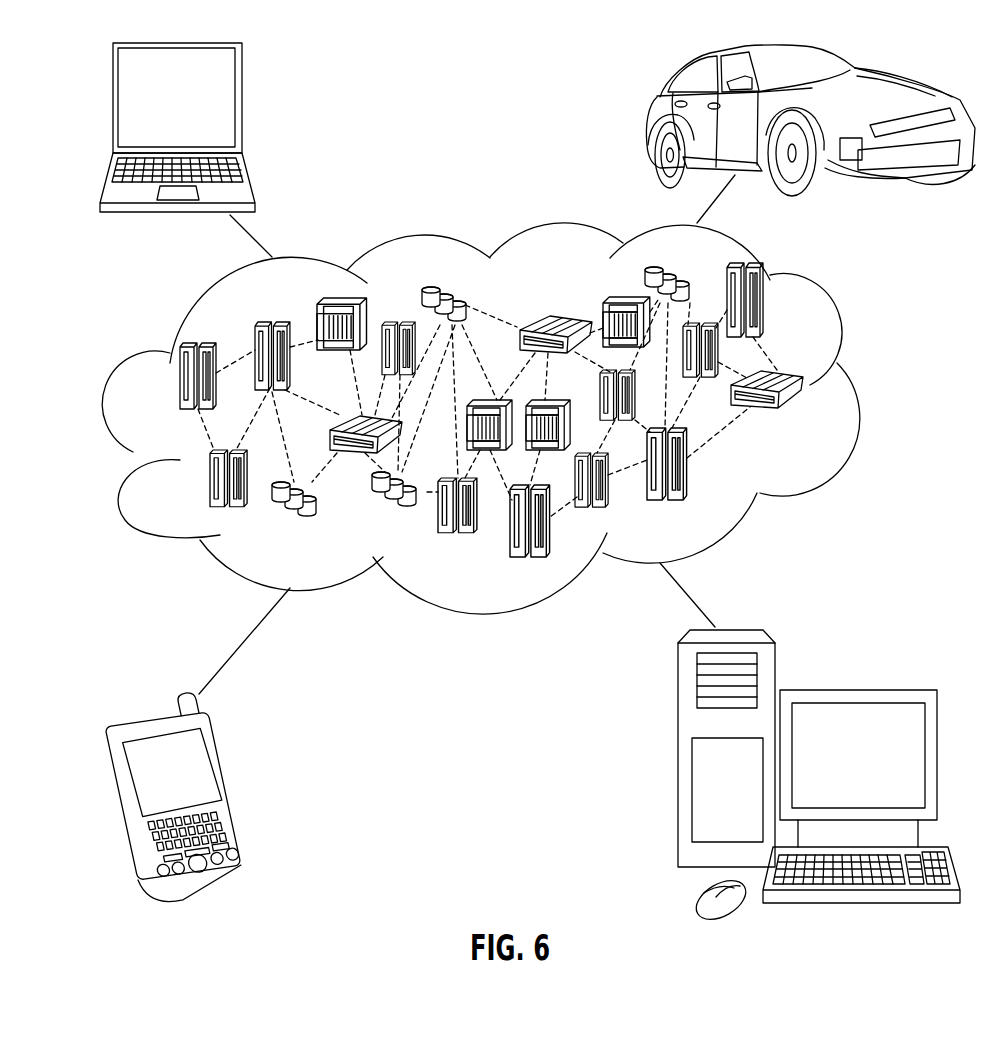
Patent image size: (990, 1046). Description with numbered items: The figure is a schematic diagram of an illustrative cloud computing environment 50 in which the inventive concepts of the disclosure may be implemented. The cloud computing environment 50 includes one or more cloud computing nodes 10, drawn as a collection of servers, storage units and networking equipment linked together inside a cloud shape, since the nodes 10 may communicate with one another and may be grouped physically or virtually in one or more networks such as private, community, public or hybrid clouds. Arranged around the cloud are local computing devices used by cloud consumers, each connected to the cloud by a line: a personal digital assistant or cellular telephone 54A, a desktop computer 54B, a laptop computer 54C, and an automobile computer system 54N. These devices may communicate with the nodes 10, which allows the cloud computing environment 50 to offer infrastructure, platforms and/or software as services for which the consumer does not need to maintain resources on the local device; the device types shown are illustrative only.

The cloud computing nodes 10 is at (802, 423).
The cloud computing environment 50 is at (857, 388).
The personal digital assistant (PDA) or cellular telephone 54A is at (235, 787).
The desktop computer 54B is at (856, 688).
The laptop computer 54C is at (242, 105).
The automobile computer system 54N is at (650, 120).